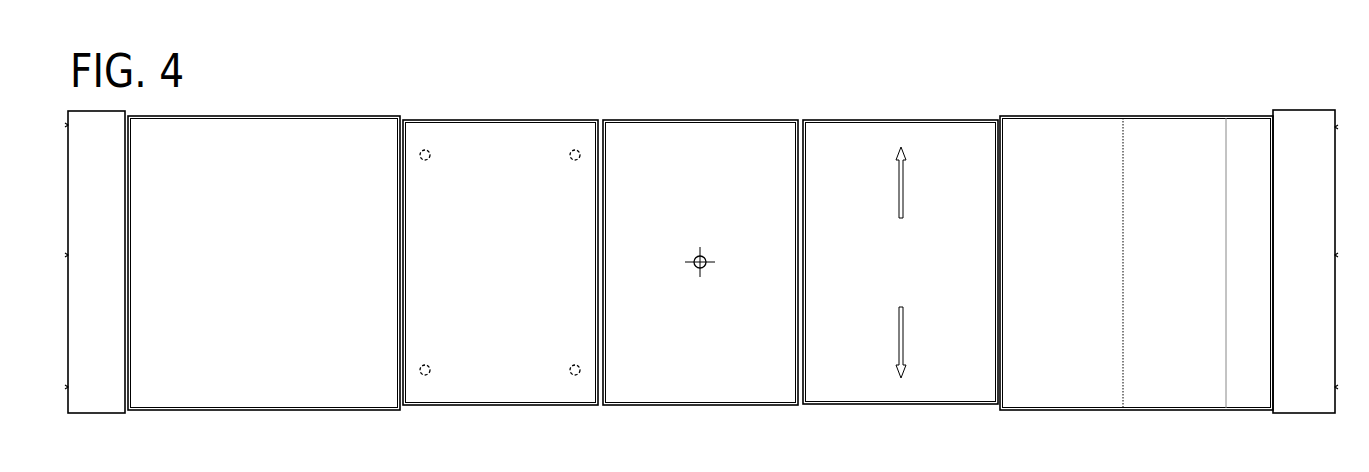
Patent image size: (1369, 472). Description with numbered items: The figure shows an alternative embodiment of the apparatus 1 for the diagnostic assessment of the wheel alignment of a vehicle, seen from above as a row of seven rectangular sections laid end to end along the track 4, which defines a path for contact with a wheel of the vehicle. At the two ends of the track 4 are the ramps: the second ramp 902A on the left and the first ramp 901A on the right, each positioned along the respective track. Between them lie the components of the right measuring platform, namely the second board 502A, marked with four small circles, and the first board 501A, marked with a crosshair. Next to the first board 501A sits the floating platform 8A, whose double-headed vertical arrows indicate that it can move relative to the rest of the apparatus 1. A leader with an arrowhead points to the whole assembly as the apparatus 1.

The apparatus 1 is at (1176, 110).
The track 4 is at (94, 254).
The floating platform 8A is at (850, 152).
The first board 501A is at (675, 215).
The second board 502A is at (472, 215).
The first ramp 901A is at (1097, 273).
The second ramp 902A is at (207, 265).